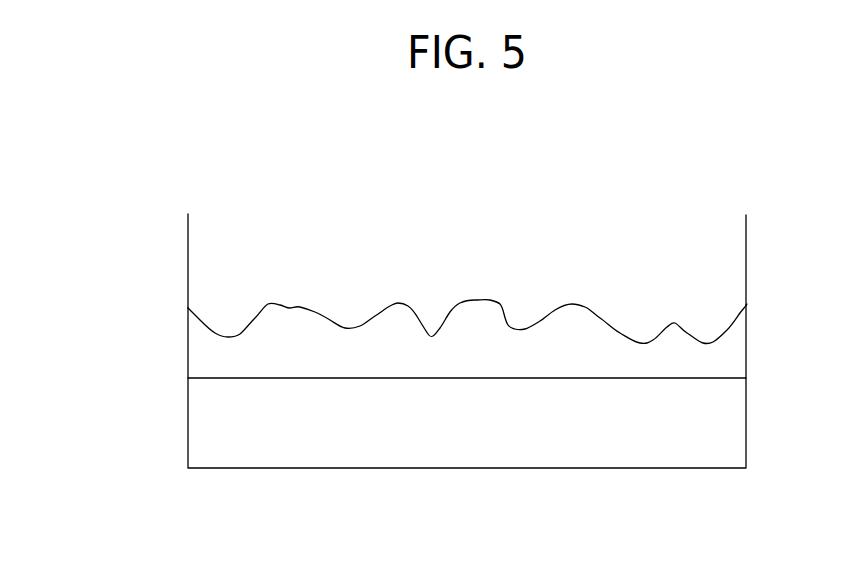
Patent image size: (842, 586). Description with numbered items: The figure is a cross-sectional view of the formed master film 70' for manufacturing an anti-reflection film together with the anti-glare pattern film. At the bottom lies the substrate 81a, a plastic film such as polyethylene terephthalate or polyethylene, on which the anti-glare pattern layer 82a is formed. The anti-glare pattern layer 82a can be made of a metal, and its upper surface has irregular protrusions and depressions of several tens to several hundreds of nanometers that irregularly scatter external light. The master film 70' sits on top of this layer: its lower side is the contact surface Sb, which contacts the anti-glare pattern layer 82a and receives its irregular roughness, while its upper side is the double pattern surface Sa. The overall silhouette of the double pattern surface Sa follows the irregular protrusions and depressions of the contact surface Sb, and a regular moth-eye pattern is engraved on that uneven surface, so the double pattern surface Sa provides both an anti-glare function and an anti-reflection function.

The double pattern surface Sa is at (582, 203).
The contact surface Sb is at (552, 329).
The master film for manufacturing an anti-reflection film 70' is at (436, 261).
The anti-glare pattern layer 82a is at (203, 353).
The substrate 81a is at (203, 420).